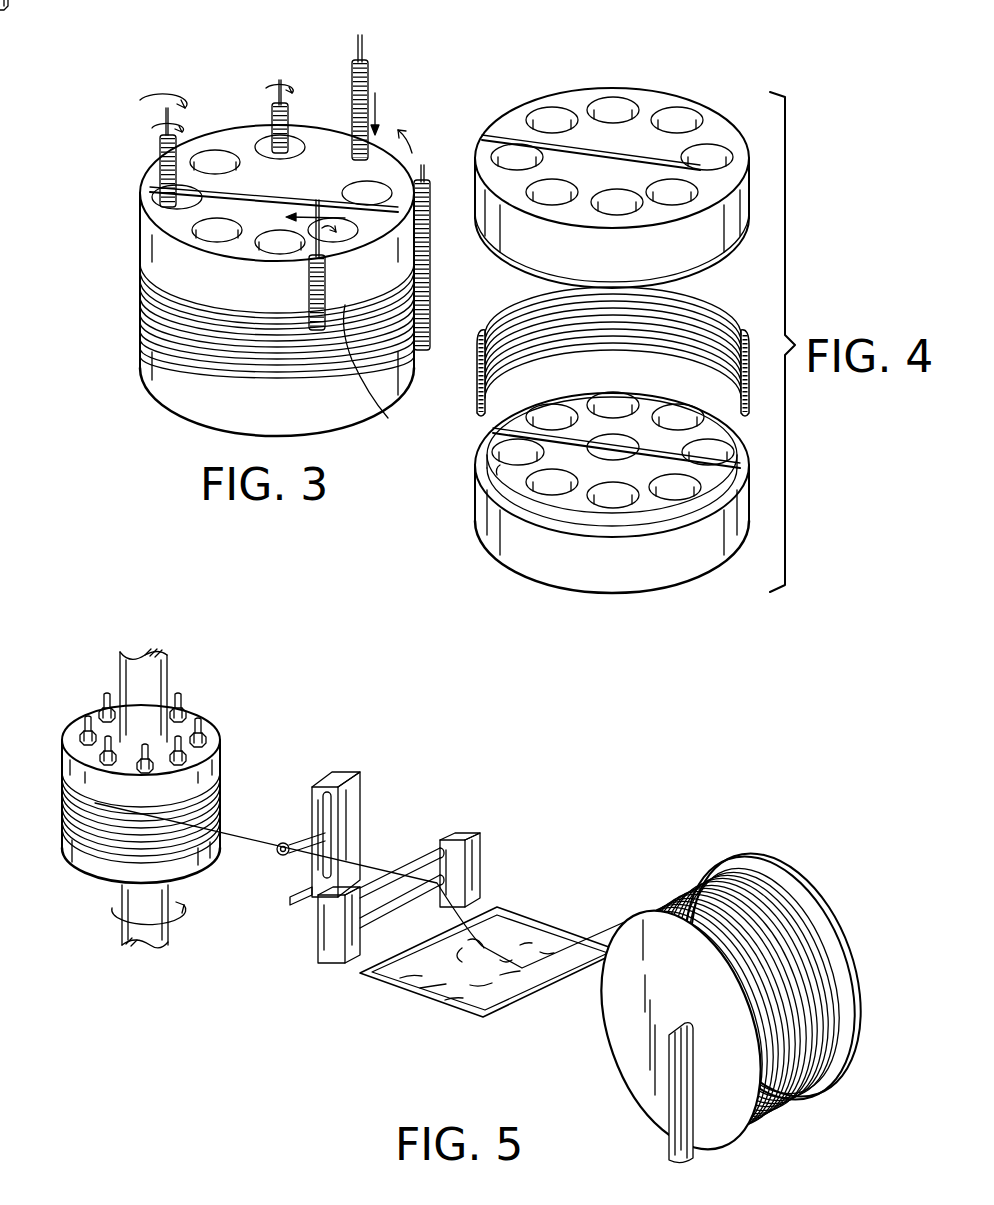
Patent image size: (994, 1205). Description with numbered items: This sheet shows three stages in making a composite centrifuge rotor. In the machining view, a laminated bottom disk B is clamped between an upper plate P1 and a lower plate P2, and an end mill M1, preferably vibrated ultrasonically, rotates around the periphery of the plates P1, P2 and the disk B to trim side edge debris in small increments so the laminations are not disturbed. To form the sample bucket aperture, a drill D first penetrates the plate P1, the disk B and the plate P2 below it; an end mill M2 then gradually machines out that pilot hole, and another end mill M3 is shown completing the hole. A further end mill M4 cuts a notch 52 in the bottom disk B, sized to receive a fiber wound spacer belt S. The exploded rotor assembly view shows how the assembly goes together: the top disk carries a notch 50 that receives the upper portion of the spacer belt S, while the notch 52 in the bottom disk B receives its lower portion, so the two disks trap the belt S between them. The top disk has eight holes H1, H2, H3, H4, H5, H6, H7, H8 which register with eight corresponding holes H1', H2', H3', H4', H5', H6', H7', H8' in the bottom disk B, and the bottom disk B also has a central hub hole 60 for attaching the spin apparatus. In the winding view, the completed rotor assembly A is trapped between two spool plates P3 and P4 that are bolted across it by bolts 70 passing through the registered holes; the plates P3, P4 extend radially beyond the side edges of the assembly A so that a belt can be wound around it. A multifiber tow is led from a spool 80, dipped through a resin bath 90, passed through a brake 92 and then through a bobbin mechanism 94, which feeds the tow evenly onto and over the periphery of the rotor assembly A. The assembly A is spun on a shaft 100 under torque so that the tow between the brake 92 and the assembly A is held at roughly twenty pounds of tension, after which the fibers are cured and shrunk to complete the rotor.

In FIG. 3, the end mill M1 is at (430, 262).
In FIG. 3, the end mill M2 is at (288, 124).
In FIG. 3, the end mill M3 is at (159, 156).
In FIG. 3, the end mill M4 is at (326, 302).
In FIG. 3, the drill D is at (370, 76).
In FIG. 3, the plate P1 is at (148, 250).
In FIG. 3, the plate P2 is at (150, 372).
In FIG. 3, the bottom disk B is at (152, 312).
In FIG. 4, the bottom disk B is at (578, 568).
In FIG. 3, the notch 52 is at (382, 371).
In FIG. 4, the notch 52 is at (497, 473).
In FIG. 4, the notch 50 is at (495, 248).
In FIG. 4, the hole H1 is at (504, 130).
In FIG. 4, the hole H2 is at (541, 97).
In FIG. 4, the hole H3 is at (615, 81).
In FIG. 4, the hole H4 is at (680, 92).
In FIG. 4, the hole H5 is at (715, 122).
In FIG. 4, the hole H6 is at (707, 228).
In FIG. 4, the hole H7 is at (631, 226).
In FIG. 4, the hole H8 is at (552, 217).
In FIG. 4, the spacer belt S is at (505, 338).
In FIG. 4, the hub hole 60 is at (610, 446).
In FIG. 4, the hole H1' is at (498, 441).
In FIG. 4, the hole H2' is at (552, 395).
In FIG. 4, the hole H3' is at (612, 382).
In FIG. 4, the hole H4' is at (677, 392).
In FIG. 4, the hole H5' is at (732, 439).
In FIG. 4, the hole H6' is at (696, 546).
In FIG. 4, the hole H7' is at (626, 524).
In FIG. 4, the hole H8' is at (509, 495).
In FIG. 5, the bolts 70 is at (203, 732).
In FIG. 5, the spool plate P3 is at (210, 856).
In FIG. 5, the spool plate P4 is at (205, 768).
In FIG. 5, the rotor assembly A is at (220, 800).
In FIG. 5, the shaft 100 is at (166, 940).
In FIG. 5, the bobbin mechanism 94 is at (294, 840).
In FIG. 5, the brake 92 is at (428, 862).
In FIG. 5, the resin bath 90 is at (428, 978).
In FIG. 5, the spool 80 is at (656, 908).